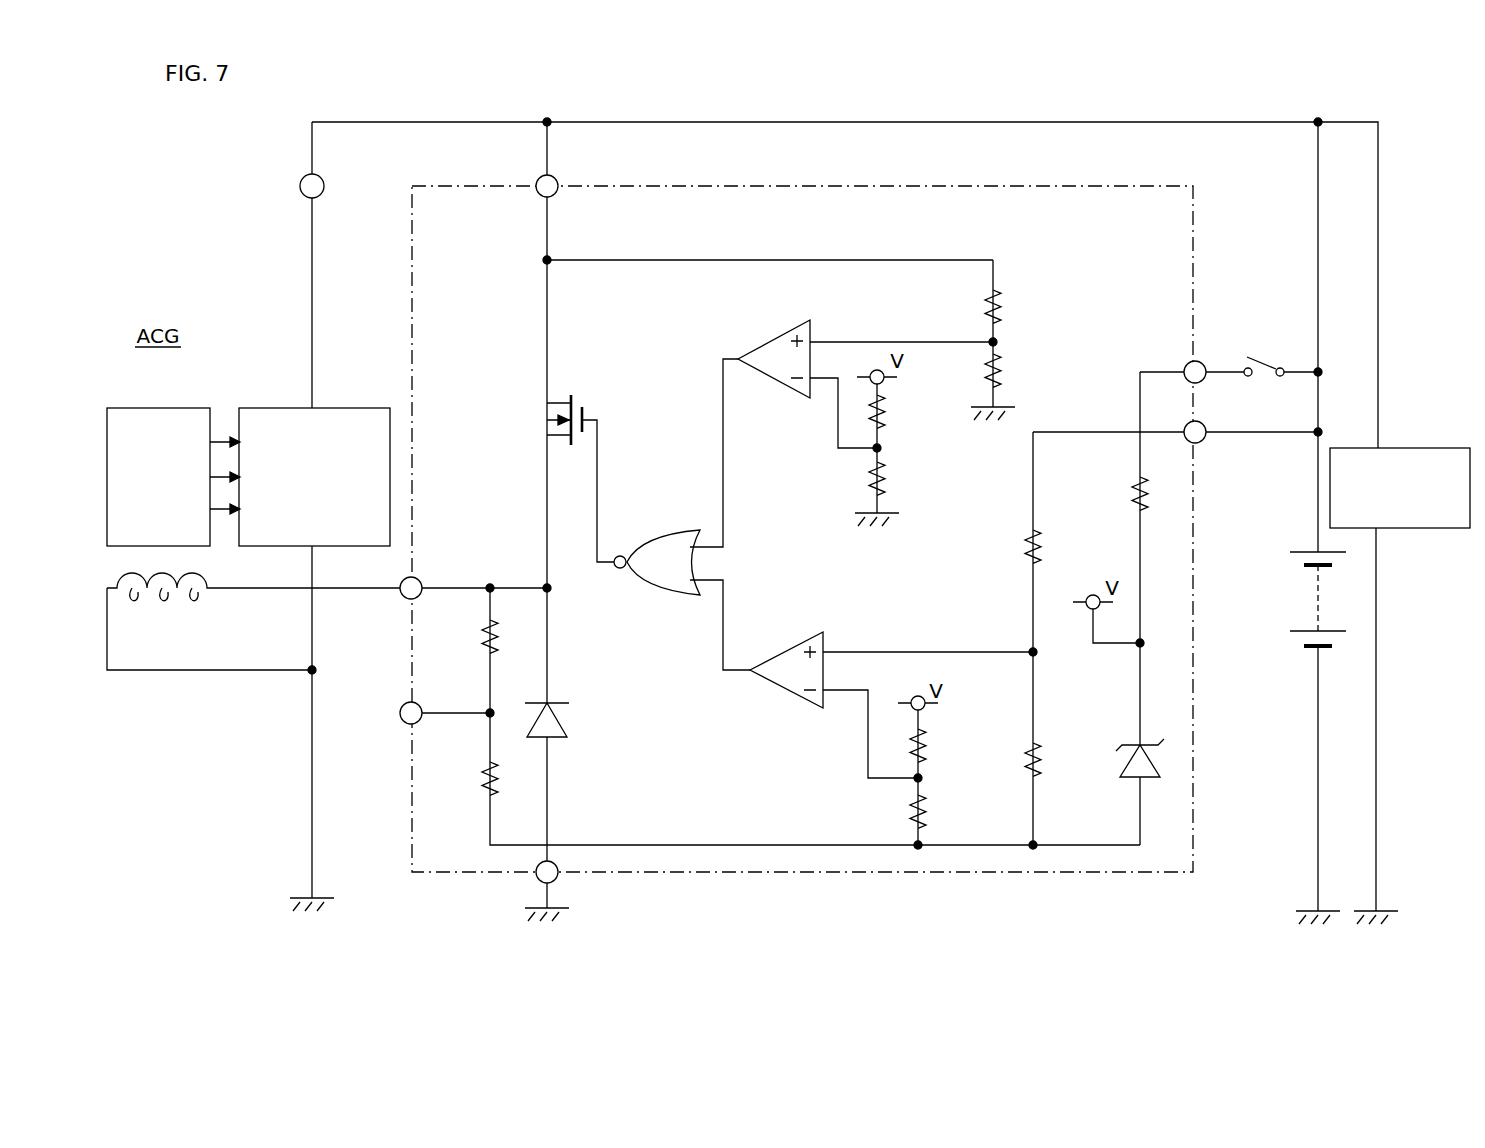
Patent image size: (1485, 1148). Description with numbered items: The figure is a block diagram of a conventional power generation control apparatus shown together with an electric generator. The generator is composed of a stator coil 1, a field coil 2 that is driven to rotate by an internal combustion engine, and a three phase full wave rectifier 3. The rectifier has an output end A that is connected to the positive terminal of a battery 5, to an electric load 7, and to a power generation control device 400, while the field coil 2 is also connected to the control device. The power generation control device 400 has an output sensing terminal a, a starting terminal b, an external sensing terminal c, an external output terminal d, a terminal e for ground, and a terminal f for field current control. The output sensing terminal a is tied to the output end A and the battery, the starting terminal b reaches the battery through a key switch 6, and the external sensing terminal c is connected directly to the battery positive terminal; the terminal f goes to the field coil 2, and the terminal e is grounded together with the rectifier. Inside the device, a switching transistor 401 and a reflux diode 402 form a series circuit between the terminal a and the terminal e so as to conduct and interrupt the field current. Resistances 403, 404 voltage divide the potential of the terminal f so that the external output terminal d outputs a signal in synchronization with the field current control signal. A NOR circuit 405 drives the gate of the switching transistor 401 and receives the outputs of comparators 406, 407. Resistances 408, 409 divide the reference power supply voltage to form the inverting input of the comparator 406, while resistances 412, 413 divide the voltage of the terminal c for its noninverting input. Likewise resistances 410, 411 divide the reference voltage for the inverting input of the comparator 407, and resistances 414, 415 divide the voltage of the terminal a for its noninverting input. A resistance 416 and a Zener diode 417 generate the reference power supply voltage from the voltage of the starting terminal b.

The stator coil 1 is at (148, 408).
The field coil 2 is at (170, 602).
The three phase full wave rectifier 3 is at (270, 408).
The battery 5 is at (1303, 607).
The key switch 6 is at (1265, 358).
The electric load 7 is at (1428, 448).
The power generation control device 400 is at (1202, 225).
The switching transistor 401 is at (587, 408).
The reflux diode 402 is at (567, 727).
The resistance 403 is at (470, 628).
The resistance 404 is at (470, 780).
The NOR circuit 405 is at (672, 533).
The comparator 406 is at (782, 648).
The comparator 407 is at (760, 347).
The resistance 408 is at (935, 750).
The resistance 409 is at (935, 807).
The resistance 410 is at (893, 417).
The resistance 411 is at (853, 477).
The resistance 412 is at (1022, 548).
The resistance 413 is at (1048, 767).
The resistance 414 is at (1010, 313).
The resistance 415 is at (1010, 370).
The resistance 416 is at (1122, 488).
The Zener diode 417 is at (1120, 762).
The output end A is at (300, 180).
The output sensing terminal a is at (539, 174).
The starting terminal b is at (1194, 363).
The external sensing terminal c is at (1177, 424).
The external output terminal d is at (435, 706).
The terminal for ground e is at (542, 891).
The terminal for field current control f is at (403, 578).